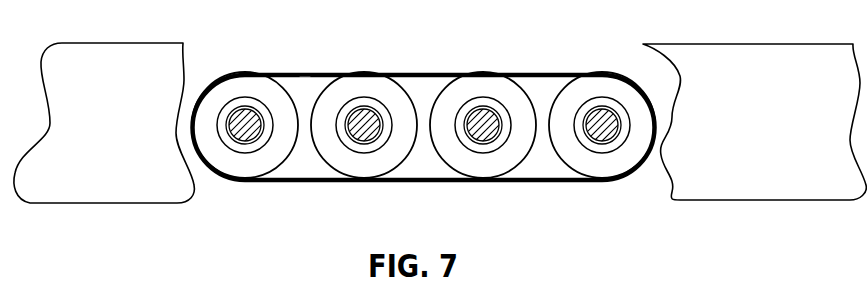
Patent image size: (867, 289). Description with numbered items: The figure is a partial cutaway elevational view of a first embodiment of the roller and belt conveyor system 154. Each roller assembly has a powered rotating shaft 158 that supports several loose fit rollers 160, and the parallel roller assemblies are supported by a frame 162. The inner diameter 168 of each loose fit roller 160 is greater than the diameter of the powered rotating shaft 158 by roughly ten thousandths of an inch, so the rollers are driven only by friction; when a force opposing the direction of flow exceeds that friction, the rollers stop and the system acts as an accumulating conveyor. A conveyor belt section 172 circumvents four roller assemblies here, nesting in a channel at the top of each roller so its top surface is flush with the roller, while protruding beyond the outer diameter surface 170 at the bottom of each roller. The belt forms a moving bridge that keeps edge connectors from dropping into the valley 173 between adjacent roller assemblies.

The roller and belt conveyor system 154 is at (423, 120).
The powered rotating shaft 158 is at (605, 137).
The loose fit roller 160 is at (245, 80).
The frame 162 is at (92, 173).
The inner diameter 168 is at (492, 137).
The outer diameter surface 170 is at (328, 165).
The conveyor belt section 172 is at (410, 72).
The valley 173 is at (302, 90).